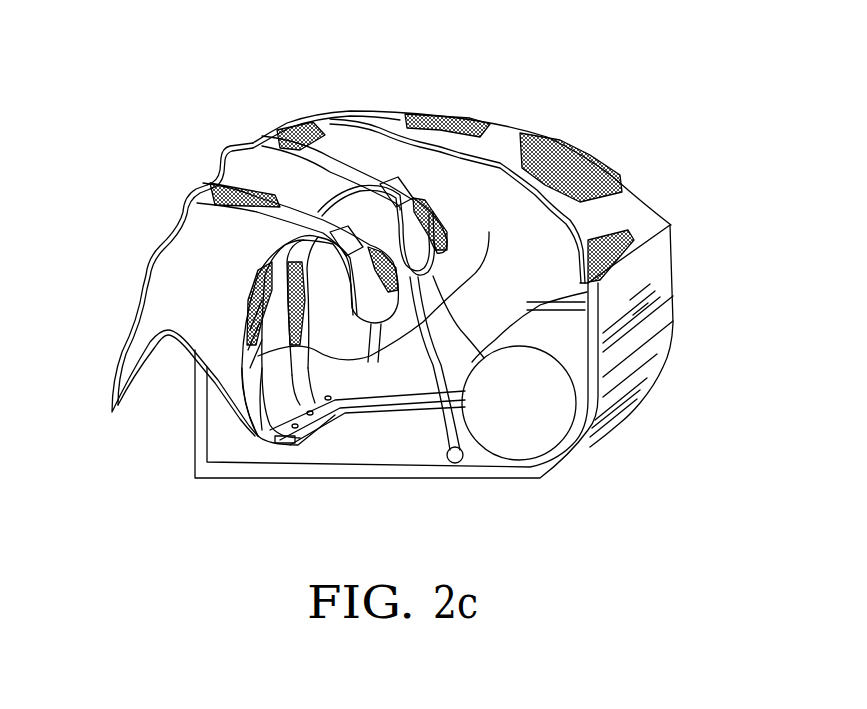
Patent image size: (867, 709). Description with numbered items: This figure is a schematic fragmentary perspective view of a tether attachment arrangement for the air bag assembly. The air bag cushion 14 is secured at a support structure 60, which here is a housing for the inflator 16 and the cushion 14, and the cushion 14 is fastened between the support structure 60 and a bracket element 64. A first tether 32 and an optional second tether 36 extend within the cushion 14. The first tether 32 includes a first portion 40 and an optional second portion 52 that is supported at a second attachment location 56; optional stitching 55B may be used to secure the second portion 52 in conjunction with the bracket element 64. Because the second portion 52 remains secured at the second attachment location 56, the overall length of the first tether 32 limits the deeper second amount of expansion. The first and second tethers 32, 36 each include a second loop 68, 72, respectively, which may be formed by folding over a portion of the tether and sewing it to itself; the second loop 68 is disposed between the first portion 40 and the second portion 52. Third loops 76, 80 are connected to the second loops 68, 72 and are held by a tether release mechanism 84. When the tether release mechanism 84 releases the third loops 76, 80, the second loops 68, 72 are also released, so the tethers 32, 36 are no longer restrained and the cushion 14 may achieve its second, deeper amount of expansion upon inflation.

The air bag cushion 14 is at (488, 140).
The inflator 16 is at (537, 430).
The first tether 32 is at (350, 157).
The second tether 36 is at (280, 207).
The first portion 40 is at (318, 175).
The second portion 52 is at (290, 342).
The stitching 55B is at (243, 428).
The second attachment location 56 is at (320, 430).
The support structure 60 is at (652, 303).
The bracket element 64 is at (277, 440).
The second loop 68 is at (420, 205).
The second loop 72 is at (373, 245).
The third loop 76 is at (472, 328).
The third loop 80 is at (381, 282).
The tether release mechanism 84 is at (450, 455).